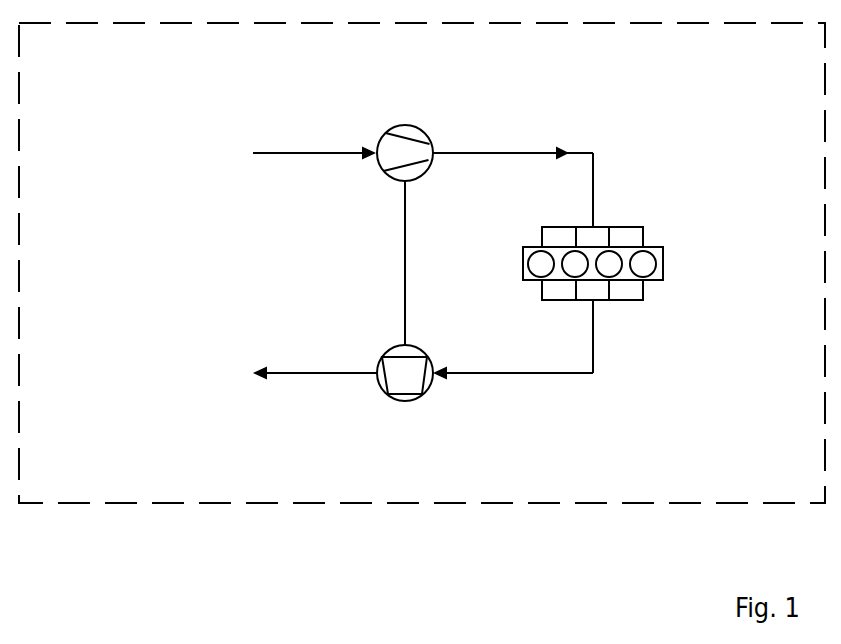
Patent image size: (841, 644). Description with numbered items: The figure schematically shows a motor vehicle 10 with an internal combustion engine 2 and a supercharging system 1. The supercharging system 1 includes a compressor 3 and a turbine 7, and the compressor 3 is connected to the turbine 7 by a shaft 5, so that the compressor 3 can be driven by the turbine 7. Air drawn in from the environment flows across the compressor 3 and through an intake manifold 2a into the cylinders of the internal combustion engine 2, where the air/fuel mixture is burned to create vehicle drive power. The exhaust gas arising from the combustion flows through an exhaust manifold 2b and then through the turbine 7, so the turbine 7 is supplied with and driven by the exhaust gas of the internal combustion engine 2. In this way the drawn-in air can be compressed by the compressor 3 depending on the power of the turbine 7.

The motor vehicle 10 is at (818, 52).
The supercharging system 1 is at (441, 276).
The compressor 3 is at (427, 137).
The shaft 5 is at (404, 295).
The turbine 7 is at (427, 355).
The internal combustion engine 2 is at (623, 269).
The intake manifold 2a is at (636, 227).
The exhaust manifold 2b is at (639, 301).